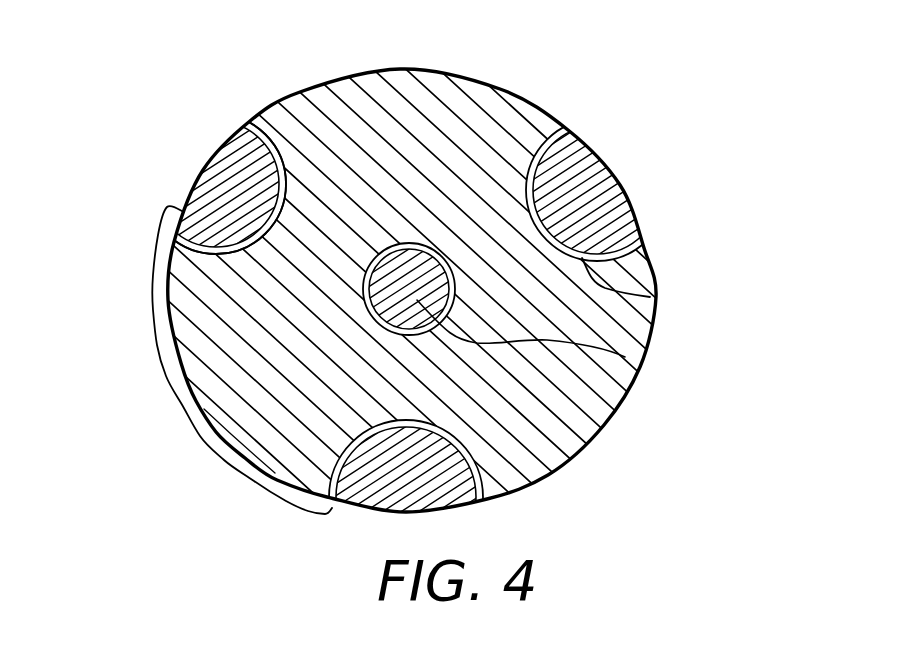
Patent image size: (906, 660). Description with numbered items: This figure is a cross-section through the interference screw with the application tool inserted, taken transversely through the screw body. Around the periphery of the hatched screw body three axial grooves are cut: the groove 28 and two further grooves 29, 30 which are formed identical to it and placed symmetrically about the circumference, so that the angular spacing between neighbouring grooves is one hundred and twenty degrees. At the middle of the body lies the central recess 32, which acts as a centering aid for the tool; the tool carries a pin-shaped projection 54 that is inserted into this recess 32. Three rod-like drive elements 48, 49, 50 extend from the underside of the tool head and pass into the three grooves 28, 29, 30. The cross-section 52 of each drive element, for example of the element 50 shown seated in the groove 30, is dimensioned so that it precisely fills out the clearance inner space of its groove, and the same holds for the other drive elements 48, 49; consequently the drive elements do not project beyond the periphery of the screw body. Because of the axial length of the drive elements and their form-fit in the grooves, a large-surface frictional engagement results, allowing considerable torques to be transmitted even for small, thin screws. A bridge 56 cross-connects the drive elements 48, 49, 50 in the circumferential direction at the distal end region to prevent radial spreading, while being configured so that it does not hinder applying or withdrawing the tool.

The groove 28 is at (470, 446).
The groove 29 is at (288, 190).
The groove 30 is at (650, 297).
The central recess 32 is at (418, 245).
The drive element 48 is at (340, 503).
The drive element 49 is at (222, 193).
The drive element 50 is at (596, 182).
The cross-section 52 is at (624, 200).
The projection 54 is at (625, 357).
The bridge 56 is at (178, 402).